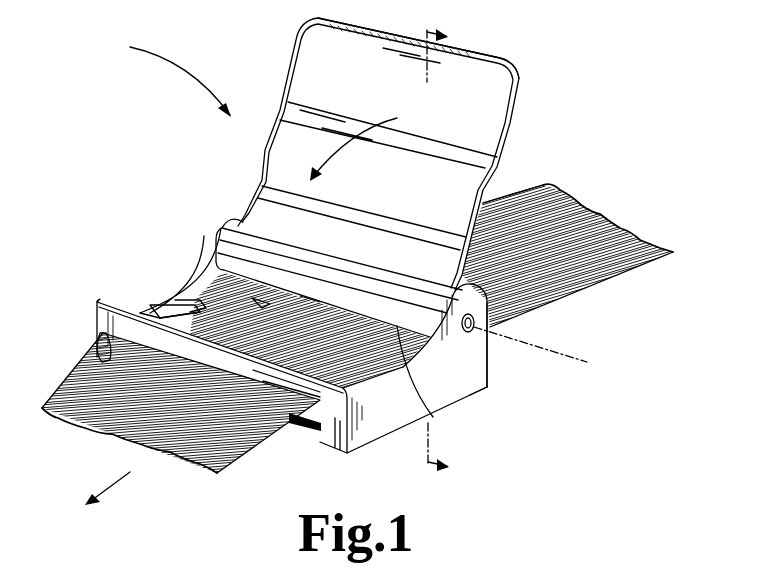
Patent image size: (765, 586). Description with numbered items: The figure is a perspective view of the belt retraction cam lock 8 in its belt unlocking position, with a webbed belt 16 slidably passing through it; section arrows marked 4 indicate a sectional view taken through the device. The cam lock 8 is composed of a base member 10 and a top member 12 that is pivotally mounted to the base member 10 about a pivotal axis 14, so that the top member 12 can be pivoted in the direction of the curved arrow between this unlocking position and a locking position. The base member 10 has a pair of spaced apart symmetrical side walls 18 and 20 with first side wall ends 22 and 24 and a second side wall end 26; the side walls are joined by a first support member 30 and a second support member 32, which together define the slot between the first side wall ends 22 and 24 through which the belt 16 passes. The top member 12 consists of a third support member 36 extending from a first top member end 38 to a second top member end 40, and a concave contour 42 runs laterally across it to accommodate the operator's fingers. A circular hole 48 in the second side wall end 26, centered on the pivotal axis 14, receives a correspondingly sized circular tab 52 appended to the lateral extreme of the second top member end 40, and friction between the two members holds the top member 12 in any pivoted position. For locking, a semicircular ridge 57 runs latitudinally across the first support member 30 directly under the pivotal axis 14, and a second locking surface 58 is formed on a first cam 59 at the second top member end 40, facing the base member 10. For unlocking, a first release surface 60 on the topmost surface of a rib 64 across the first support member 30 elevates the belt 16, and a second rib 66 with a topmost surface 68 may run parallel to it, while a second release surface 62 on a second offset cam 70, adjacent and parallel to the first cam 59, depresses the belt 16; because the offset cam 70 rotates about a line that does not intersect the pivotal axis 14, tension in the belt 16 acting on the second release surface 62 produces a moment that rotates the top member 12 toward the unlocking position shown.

The section line 4- 4 is at (444, 254).
The belt retraction cam lock 8 is at (171, 74).
The base member 10 is at (395, 442).
The top member 12 is at (522, 127).
The pivotal axis 14 is at (87, 212).
The webbed belt 16 is at (102, 443).
The side wall 18 is at (463, 387).
The side wall 20 is at (205, 242).
The first side wall end 22 is at (340, 450).
The first side wall end 24 is at (100, 342).
The second side wall end 26 is at (488, 377).
The first support member 30 is at (317, 421).
The second support member 32 is at (120, 323).
The third support member 36 is at (503, 83).
The first top member end 38 is at (356, 16).
The second top member end 40 is at (433, 417).
The concave contour 42 is at (497, 190).
The circular hole 48 is at (487, 388).
The circular tab 52 is at (487, 345).
The semicircular ridge 57 is at (258, 298).
The second locking surface 58 is at (213, 250).
The first cam 59 is at (310, 297).
The first release surface 60 is at (193, 287).
The second release surface 62 is at (240, 222).
The rib 64 is at (167, 277).
The second rib 66 is at (150, 307).
The topmost surface 68 is at (173, 310).
The second offset cam 70 is at (266, 197).